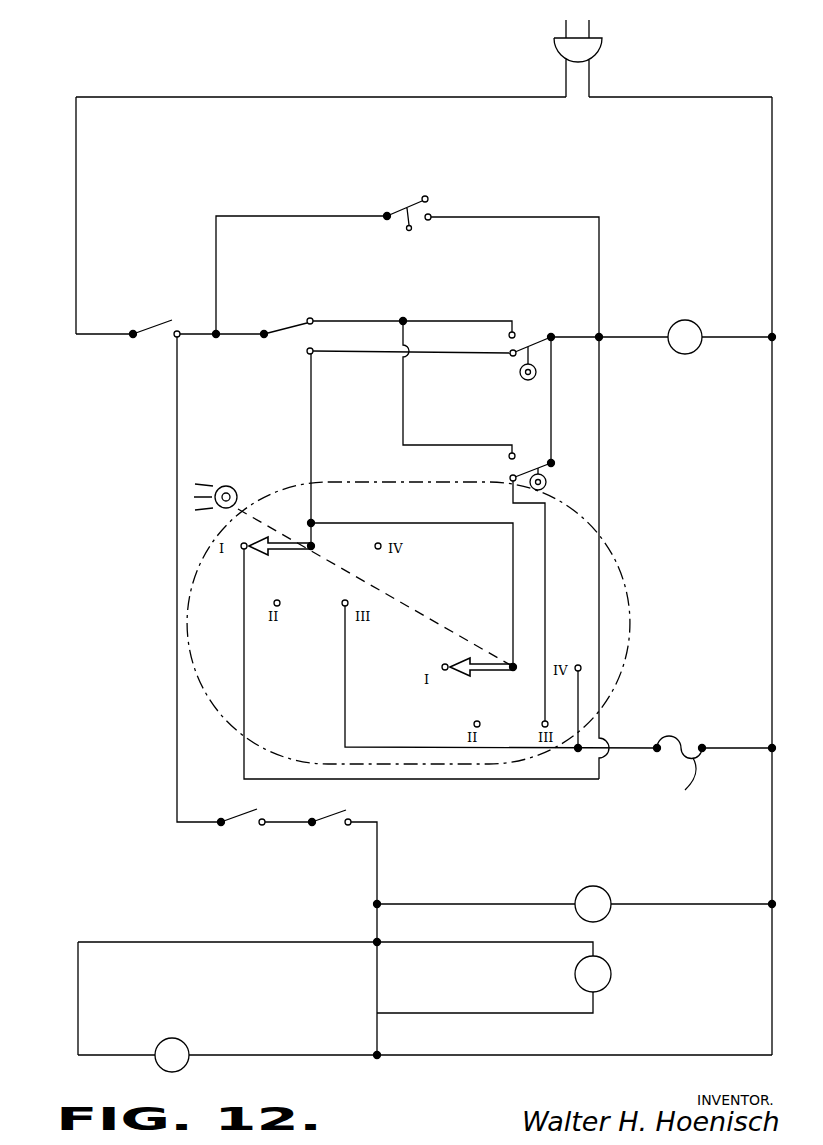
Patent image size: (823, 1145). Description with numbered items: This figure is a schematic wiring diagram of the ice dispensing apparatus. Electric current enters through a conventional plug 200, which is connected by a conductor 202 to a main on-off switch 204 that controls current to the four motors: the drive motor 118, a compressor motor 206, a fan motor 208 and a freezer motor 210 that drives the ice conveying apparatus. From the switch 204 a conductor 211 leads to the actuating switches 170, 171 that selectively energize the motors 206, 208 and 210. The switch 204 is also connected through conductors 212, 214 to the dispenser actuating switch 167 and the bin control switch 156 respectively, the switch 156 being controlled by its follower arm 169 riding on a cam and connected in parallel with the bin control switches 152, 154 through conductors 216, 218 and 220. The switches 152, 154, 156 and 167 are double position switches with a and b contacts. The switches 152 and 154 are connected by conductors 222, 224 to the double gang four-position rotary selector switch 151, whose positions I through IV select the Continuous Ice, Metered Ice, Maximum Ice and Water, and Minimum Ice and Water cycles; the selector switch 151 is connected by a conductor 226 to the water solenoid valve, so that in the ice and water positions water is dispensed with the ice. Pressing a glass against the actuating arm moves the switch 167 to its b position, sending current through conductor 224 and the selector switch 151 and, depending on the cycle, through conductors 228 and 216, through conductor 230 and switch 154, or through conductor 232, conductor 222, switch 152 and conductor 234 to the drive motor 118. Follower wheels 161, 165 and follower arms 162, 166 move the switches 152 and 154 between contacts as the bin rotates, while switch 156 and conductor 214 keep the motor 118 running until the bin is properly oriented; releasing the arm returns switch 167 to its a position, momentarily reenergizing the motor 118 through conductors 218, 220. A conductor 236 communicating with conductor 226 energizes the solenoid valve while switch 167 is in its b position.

The plug 200 is at (598, 47).
The conductor 202 is at (172, 97).
The main on-off switch 204 is at (151, 328).
The compressor motor 206 is at (612, 972).
The fan motor 208 is at (188, 1038).
The freezer motor 210 is at (607, 890).
The conductor 211 is at (177, 441).
The conductor 212 is at (200, 336).
The conductor 214 is at (260, 215).
The conductor 216 is at (585, 337).
The conductor 218 is at (362, 320).
The conductor 220 is at (407, 405).
The conductor 222 is at (510, 490).
The conductor 224 is at (310, 443).
The conductor 226 is at (597, 733).
The conductor 228 is at (473, 780).
The conductor 230 is at (353, 354).
The conductor 232 is at (438, 525).
The conductor 234 is at (549, 416).
The conductor 236 is at (580, 682).
The drive motor 118 is at (678, 355).
The four-position rotary selector switch 151 is at (232, 490).
The bin control switch 152 is at (522, 467).
The bin control switch 154 is at (536, 334).
The bin control switch 156 is at (410, 203).
The follower wheel 161 is at (546, 486).
The follower arm 162 is at (547, 471).
The follower wheel 165 is at (534, 379).
The follower arm 166 is at (530, 351).
The dispenser actuating switch 167 is at (280, 329).
The follower arm 169 is at (396, 223).
The actuating switch 170 is at (240, 824).
The actuating switch 171 is at (325, 825).